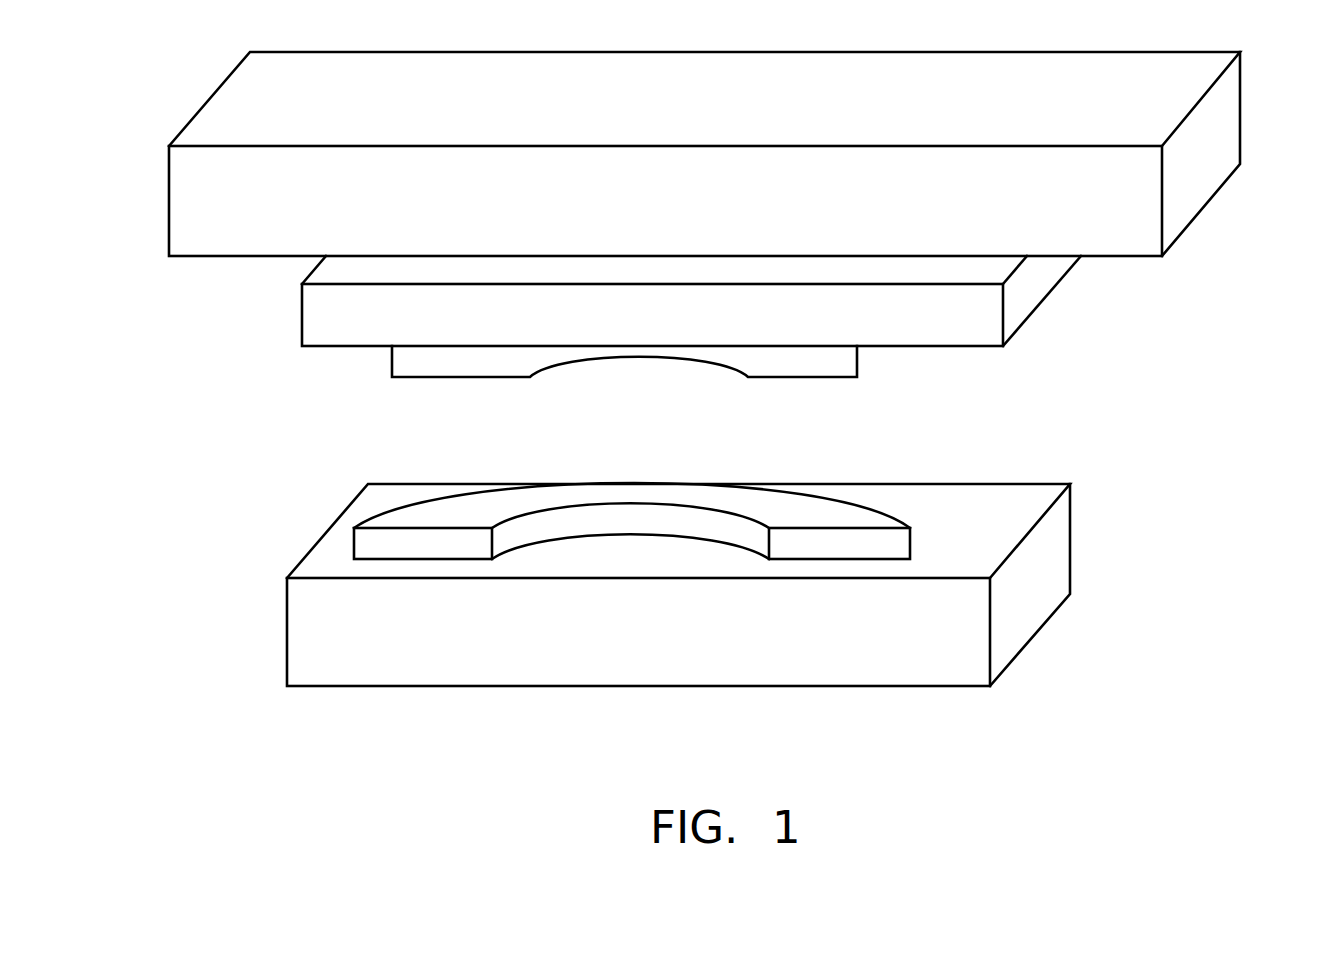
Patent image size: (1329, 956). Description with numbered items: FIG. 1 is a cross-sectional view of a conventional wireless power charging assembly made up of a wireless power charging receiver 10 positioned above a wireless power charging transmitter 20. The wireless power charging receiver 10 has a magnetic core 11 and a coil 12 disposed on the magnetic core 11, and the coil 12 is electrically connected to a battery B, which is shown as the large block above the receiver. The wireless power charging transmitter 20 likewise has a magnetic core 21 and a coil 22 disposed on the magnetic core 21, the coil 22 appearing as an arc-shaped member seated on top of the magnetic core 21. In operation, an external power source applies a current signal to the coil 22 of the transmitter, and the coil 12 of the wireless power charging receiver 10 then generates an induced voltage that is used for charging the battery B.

The battery B is at (1213, 144).
The wireless power charging receiver 10 is at (631, 333).
The magnetic core 11 is at (1030, 290).
The coil 12 is at (838, 363).
The wireless power charging transmitter 20 is at (650, 584).
The magnetic core 21 is at (1030, 599).
The coil 22 is at (877, 543).